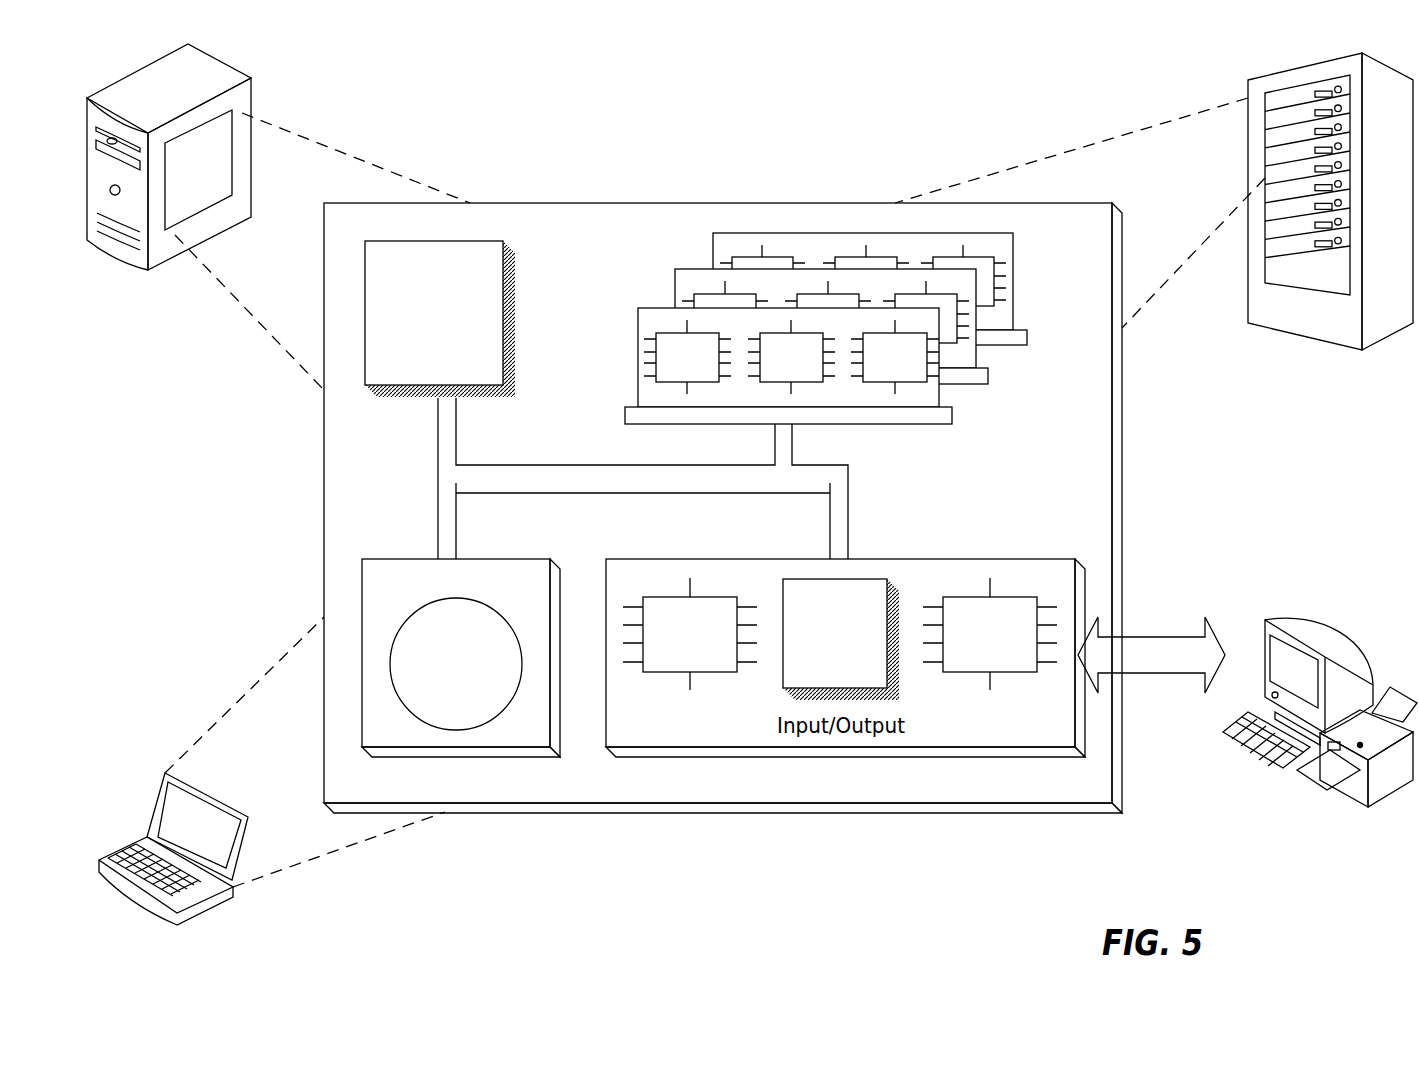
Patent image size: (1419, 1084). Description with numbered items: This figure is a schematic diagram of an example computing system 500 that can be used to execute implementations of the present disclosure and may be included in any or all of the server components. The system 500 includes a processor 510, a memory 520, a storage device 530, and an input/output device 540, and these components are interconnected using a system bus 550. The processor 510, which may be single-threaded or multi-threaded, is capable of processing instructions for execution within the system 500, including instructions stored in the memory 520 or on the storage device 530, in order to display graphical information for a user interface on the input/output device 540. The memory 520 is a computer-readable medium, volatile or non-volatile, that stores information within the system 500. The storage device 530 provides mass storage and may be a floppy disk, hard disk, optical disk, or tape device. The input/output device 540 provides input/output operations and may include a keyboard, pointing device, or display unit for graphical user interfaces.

The computing system 500 is at (535, 118).
The processor 510 is at (492, 375).
The memory 520 is at (1025, 389).
The storage device 530 is at (538, 738).
The input/output device 540 is at (1264, 625).
The system bus 550 is at (640, 485).